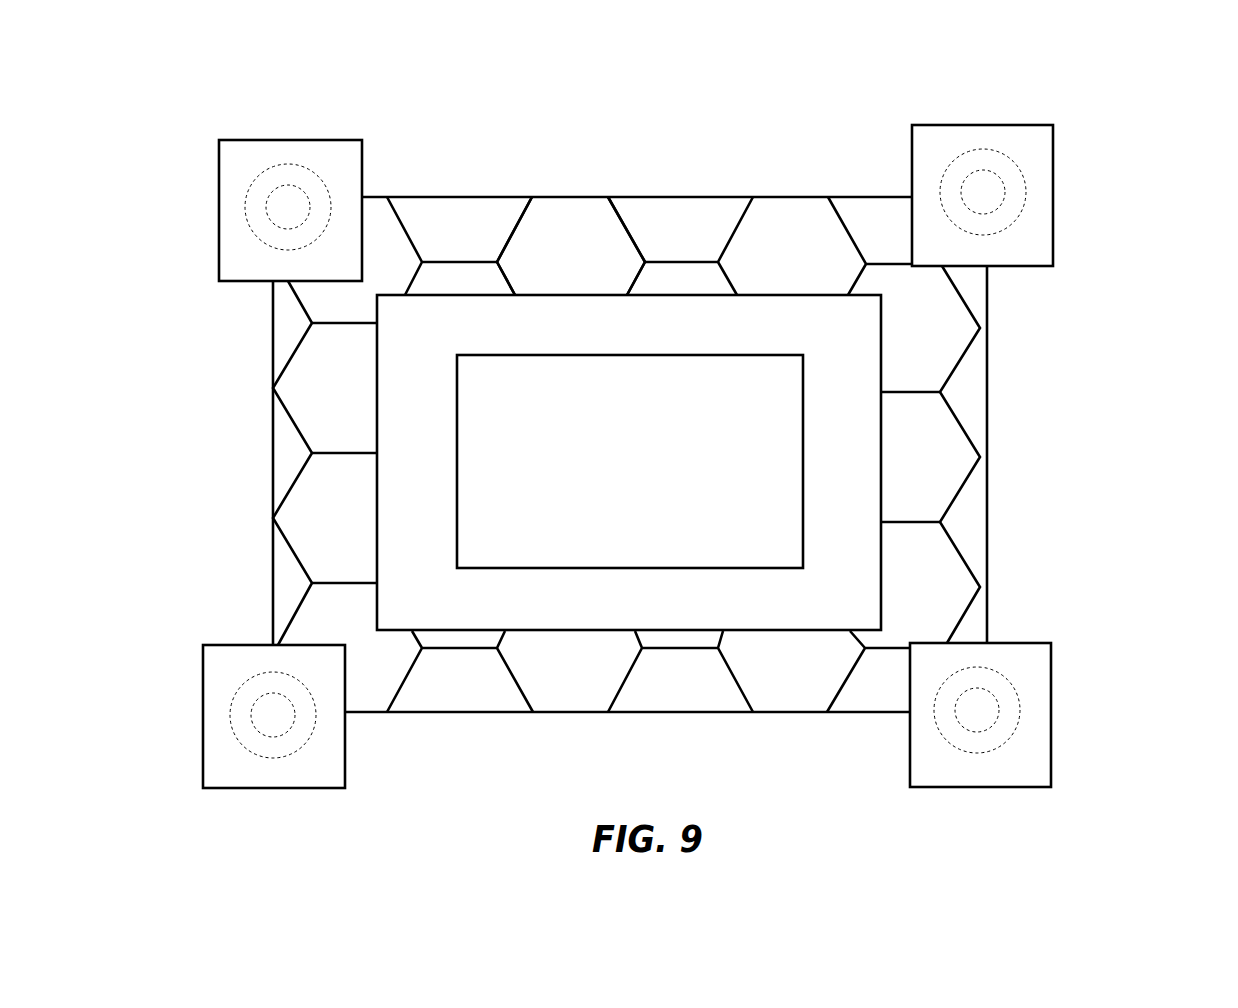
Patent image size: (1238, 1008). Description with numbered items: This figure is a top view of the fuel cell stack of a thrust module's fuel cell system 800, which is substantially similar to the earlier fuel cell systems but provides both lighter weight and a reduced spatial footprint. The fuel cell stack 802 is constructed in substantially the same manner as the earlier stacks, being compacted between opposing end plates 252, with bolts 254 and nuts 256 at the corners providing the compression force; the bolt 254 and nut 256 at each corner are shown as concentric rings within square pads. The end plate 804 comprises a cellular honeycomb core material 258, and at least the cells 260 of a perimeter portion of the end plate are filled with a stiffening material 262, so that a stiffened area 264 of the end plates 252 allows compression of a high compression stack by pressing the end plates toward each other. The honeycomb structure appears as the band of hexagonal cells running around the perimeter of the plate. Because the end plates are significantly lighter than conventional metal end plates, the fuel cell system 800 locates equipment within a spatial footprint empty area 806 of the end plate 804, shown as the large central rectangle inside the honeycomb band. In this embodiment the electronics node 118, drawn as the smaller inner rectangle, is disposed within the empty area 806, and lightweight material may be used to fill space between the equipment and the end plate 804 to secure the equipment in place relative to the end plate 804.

The fuel cell system 800 is at (653, 438).
The fuel cell stack 802 is at (637, 156).
The end plate 804 is at (485, 188).
The spatial footprint empty area 806 is at (862, 503).
The electronics node 118 is at (622, 478).
The bolt 254 is at (284, 202).
The nut 256 is at (322, 178).
The cellular honeycomb core material 258 is at (789, 184).
The cell 260 is at (620, 182).
The stiffening material 262 is at (553, 273).
The end plate 252 is at (789, 184).
The stiffened area 264 is at (690, 197).